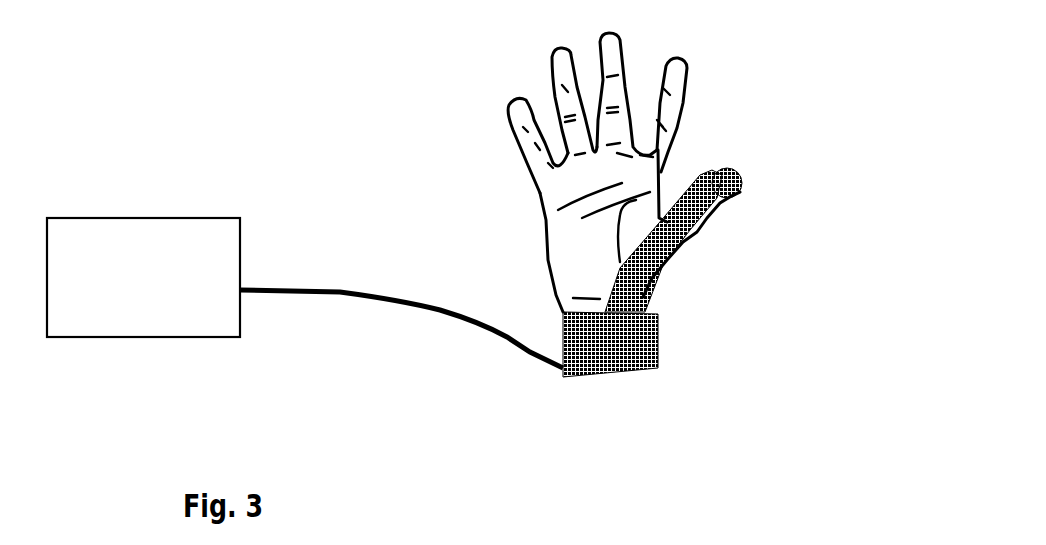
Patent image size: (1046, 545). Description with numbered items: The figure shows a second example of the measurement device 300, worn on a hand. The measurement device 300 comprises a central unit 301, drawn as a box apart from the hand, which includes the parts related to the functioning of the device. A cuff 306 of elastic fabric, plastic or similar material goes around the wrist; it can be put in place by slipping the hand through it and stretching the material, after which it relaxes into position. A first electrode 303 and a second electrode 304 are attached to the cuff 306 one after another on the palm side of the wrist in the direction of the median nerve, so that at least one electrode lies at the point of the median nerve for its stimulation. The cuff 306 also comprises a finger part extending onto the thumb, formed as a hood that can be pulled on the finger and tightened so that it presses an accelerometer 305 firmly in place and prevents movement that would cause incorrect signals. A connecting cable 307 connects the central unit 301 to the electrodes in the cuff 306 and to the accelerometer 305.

The measurement device 300 is at (242, 125).
The central unit 301 is at (218, 337).
The first electrode 303 is at (660, 365).
The second electrode 304 is at (658, 313).
The accelerometer 305 is at (727, 177).
The cuff 306 is at (556, 330).
The connecting cable 307 is at (428, 312).